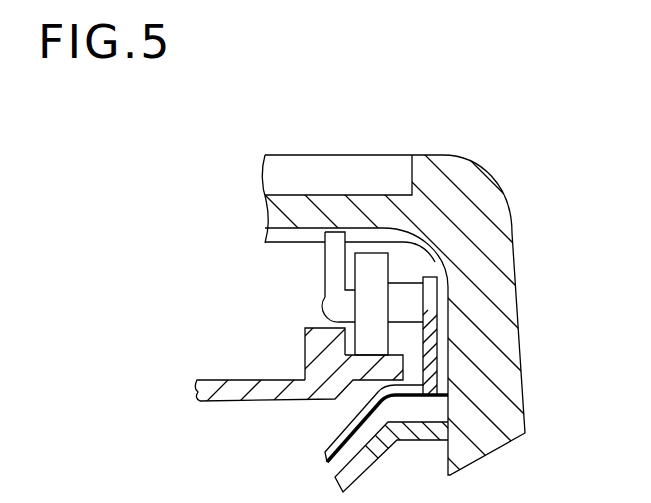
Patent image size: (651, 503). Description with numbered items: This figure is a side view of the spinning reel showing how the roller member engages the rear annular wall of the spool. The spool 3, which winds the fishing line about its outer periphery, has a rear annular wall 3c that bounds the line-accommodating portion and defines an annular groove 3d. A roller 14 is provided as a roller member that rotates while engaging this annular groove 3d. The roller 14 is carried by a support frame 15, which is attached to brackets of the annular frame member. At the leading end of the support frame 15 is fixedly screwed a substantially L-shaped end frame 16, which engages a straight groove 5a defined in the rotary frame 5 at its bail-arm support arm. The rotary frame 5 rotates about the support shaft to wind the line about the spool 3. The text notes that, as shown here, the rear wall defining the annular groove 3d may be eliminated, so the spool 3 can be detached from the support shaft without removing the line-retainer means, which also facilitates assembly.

The spool 3 is at (212, 382).
The rear annular wall 3c is at (310, 352).
The annular groove 3d is at (396, 353).
The rotary frame 5 is at (508, 350).
The straight groove 5a is at (291, 230).
The roller 14 is at (378, 268).
The support frame 15 is at (440, 383).
The end frame 16 is at (335, 231).